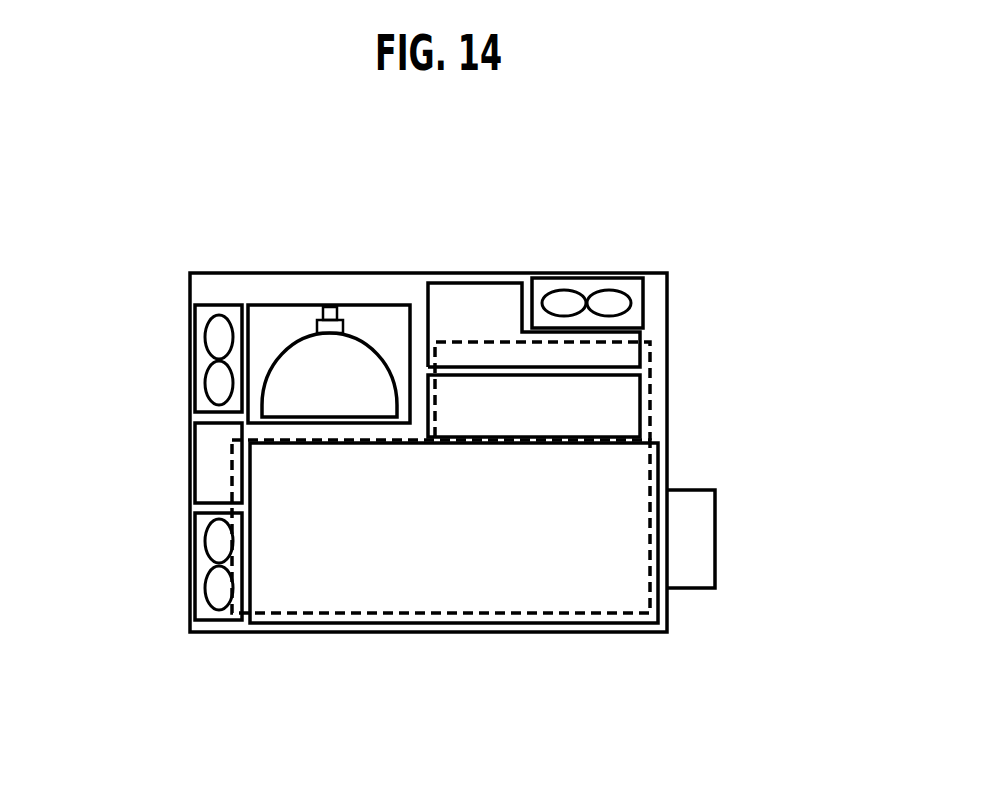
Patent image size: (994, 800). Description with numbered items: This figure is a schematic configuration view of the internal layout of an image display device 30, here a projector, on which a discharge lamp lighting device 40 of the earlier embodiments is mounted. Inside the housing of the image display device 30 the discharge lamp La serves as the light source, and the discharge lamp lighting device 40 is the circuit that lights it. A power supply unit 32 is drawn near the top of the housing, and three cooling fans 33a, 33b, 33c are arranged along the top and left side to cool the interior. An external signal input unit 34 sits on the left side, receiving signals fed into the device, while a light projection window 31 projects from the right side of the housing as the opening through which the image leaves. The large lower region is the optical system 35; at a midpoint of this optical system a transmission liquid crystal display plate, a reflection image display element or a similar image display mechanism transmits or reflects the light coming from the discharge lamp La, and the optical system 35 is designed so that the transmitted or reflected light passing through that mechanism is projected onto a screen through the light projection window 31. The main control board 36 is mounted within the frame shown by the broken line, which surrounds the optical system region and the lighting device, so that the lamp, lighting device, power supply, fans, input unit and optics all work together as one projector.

The image display device 30 is at (188, 285).
The light projection window 31 is at (707, 540).
The power supply unit 32 is at (472, 303).
The cooling fan 33a is at (587, 287).
The cooling fan 33b is at (207, 362).
The cooling fan 33c is at (207, 570).
The external signal input unit 34 is at (207, 477).
The optical system 35 is at (332, 543).
The main control board 36 is at (567, 613).
The discharge lamp lighting device 40 is at (573, 408).
The discharge lamp La is at (302, 358).